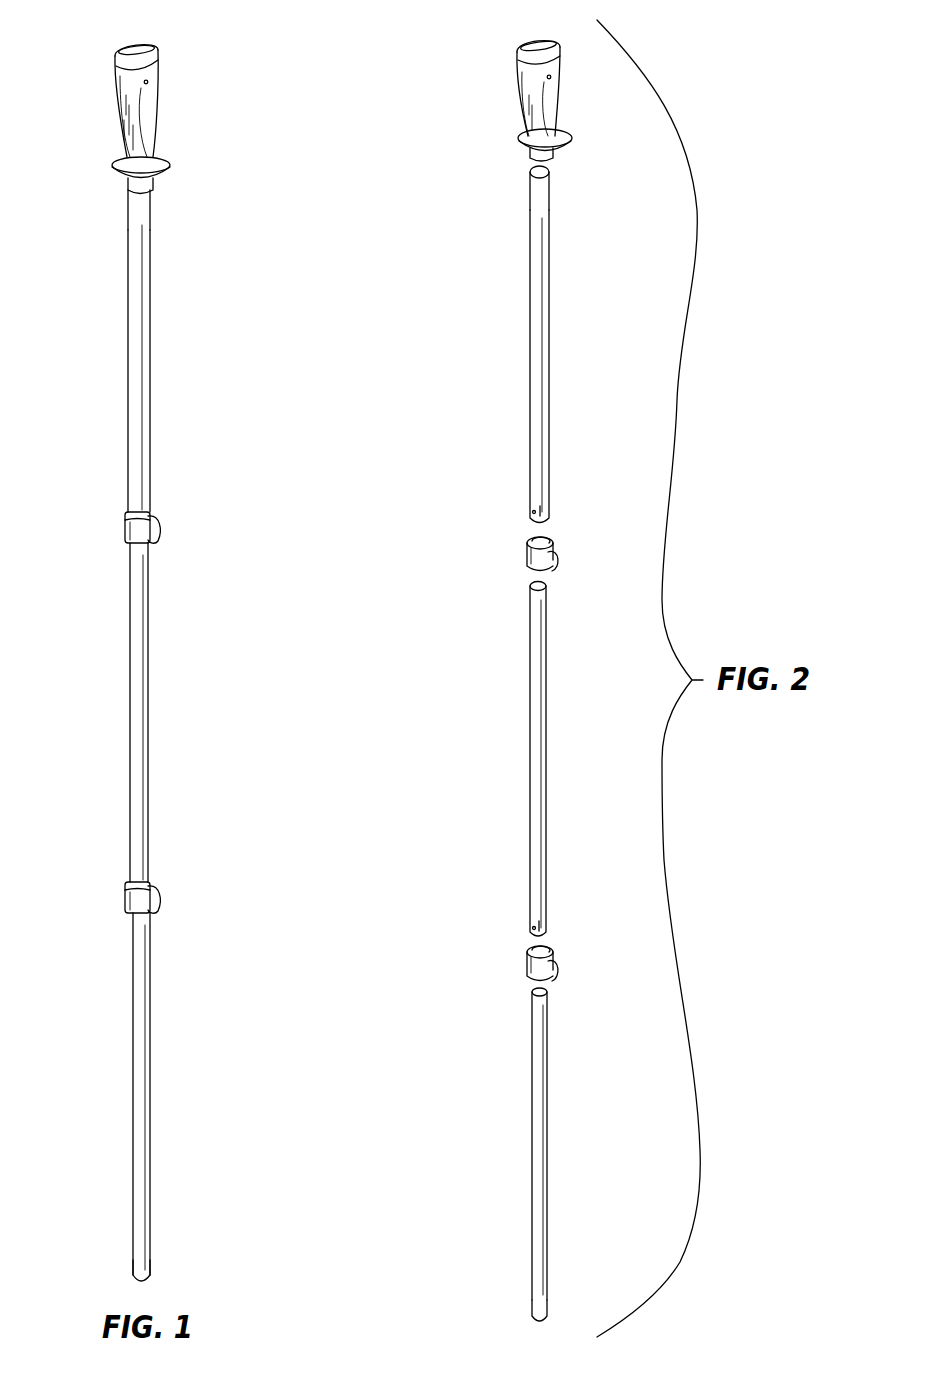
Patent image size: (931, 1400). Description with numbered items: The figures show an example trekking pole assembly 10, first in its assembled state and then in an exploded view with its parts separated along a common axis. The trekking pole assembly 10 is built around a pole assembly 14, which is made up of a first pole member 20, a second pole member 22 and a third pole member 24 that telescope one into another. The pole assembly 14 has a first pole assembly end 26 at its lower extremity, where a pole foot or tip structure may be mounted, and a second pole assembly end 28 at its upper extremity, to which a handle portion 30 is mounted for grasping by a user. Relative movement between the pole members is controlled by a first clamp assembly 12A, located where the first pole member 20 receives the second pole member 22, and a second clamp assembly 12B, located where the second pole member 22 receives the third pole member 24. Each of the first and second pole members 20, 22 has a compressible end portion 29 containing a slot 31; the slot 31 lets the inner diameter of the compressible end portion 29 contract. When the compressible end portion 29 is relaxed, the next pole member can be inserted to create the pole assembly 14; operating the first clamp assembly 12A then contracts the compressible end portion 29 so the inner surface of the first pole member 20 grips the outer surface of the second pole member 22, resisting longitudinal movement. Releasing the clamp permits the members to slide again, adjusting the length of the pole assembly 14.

In FIG. 1, the trekking pole assembly 10 is at (78, 100).
In FIG. 2, the trekking pole assembly 10 is at (407, 369).
In FIG. 1, the first clamp assembly 12A is at (125, 524).
In FIG. 2, the first clamp assembly 12A is at (527, 553).
In FIG. 1, the second clamp assembly 12B is at (125, 894).
In FIG. 2, the second clamp assembly 12B is at (527, 965).
In FIG. 1, the pole assembly 14 is at (153, 282).
In FIG. 2, the pole assembly 14 is at (558, 258).
In FIG. 1, the first pole member 20 is at (130, 363).
In FIG. 2, the first pole member 20 is at (530, 342).
In FIG. 1, the second pole member 22 is at (130, 707).
In FIG. 2, the second pole member 22 is at (530, 750).
In FIG. 1, the third pole member 24 is at (132, 1035).
In FIG. 2, the third pole member 24 is at (532, 1135).
In FIG. 1, the first pole assembly end 26 is at (137, 1275).
In FIG. 2, the first pole assembly end 26 is at (533, 1308).
In FIG. 1, the second pole assembly end 28 is at (133, 207).
In FIG. 2, the second pole assembly end 28 is at (530, 185).
In FIG. 2, the compressible end portion 29 is at (530, 505).
In FIG. 1, the handle portion 30 is at (160, 98).
In FIG. 2, the handle portion 30 is at (555, 112).
In FIG. 2, the slot 31 is at (548, 512).